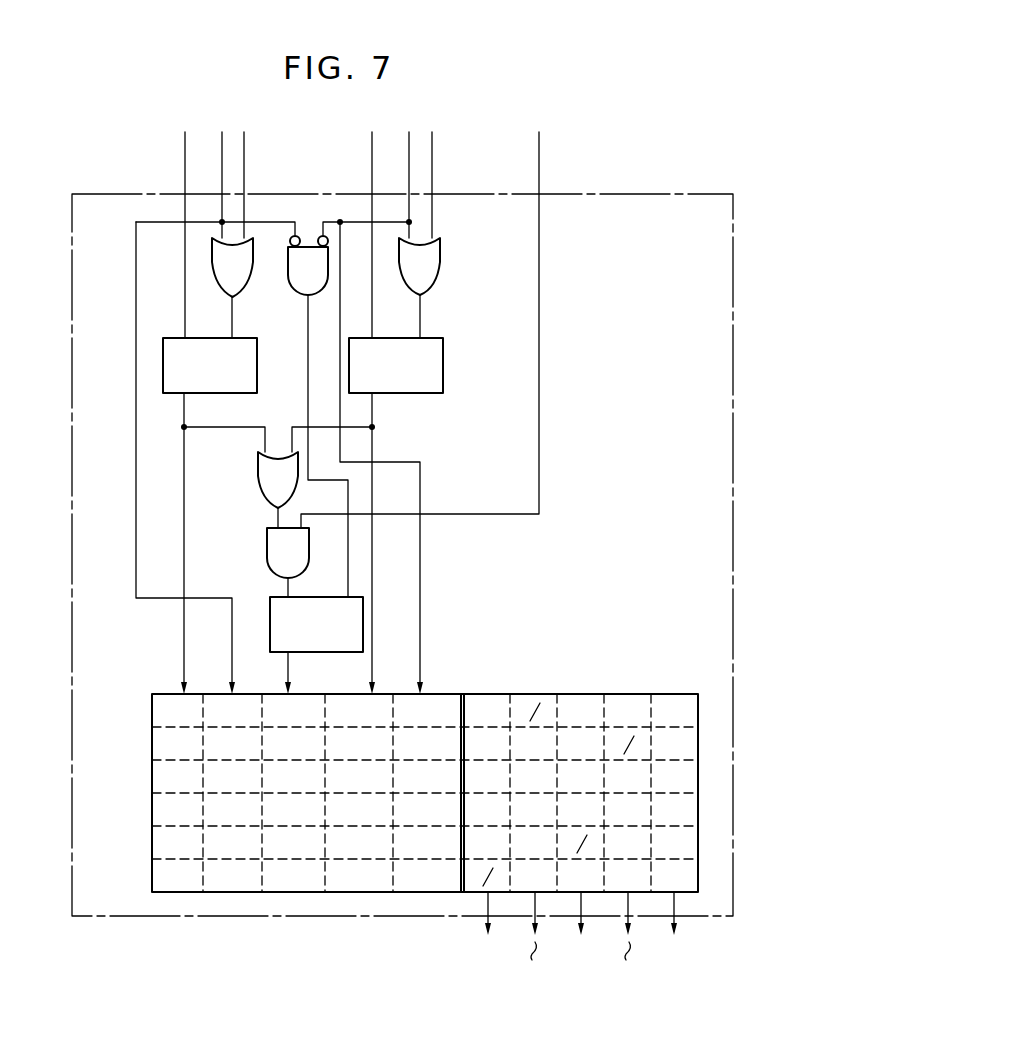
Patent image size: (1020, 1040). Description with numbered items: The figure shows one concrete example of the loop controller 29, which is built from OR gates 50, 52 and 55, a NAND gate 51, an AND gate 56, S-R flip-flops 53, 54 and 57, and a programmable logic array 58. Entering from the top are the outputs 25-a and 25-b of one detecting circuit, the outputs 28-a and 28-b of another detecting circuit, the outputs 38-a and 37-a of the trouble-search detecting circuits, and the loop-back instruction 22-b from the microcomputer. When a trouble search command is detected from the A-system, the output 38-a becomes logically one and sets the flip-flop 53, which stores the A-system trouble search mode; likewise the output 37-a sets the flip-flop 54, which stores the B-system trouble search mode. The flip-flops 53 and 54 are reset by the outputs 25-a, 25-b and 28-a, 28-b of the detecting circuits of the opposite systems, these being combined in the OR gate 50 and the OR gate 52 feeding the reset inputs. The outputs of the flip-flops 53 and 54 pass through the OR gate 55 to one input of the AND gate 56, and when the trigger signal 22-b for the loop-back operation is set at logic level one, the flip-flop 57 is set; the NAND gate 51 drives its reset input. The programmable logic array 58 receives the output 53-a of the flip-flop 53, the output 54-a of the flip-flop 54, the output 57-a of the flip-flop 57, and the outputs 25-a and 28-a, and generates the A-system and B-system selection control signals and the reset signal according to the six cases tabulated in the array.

The output of the detecting circuit 25 25-a is at (222, 150).
The output of the detecting circuit 25 25-b is at (247, 148).
The output of the detecting circuit 38 38-a is at (186, 171).
The output of the detecting circuit 37 37-a is at (374, 172).
The output of the detecting circuit 28 28-a is at (409, 146).
The output of the detecting circuit 28 28-b is at (430, 170).
The loop-back instruction 22-b is at (540, 170).
The loop controller 29 is at (680, 194).
The OR gate 50 is at (225, 286).
The NAND gate 51 is at (292, 289).
The OR gate 52 is at (438, 284).
The S-R flip-flop 53 is at (257, 373).
The S-R flip-flop 54 is at (443, 373).
The OR gate 55 is at (260, 498).
The AND gate 56 is at (268, 540).
The S-R flip-flop 57 is at (310, 597).
The output of flip-flop 53 53-a is at (184, 641).
The output of flip-flop 54 54-a is at (372, 636).
The output of flip-flop 57 57-a is at (289, 670).
The programmable logic array 58 is at (622, 693).